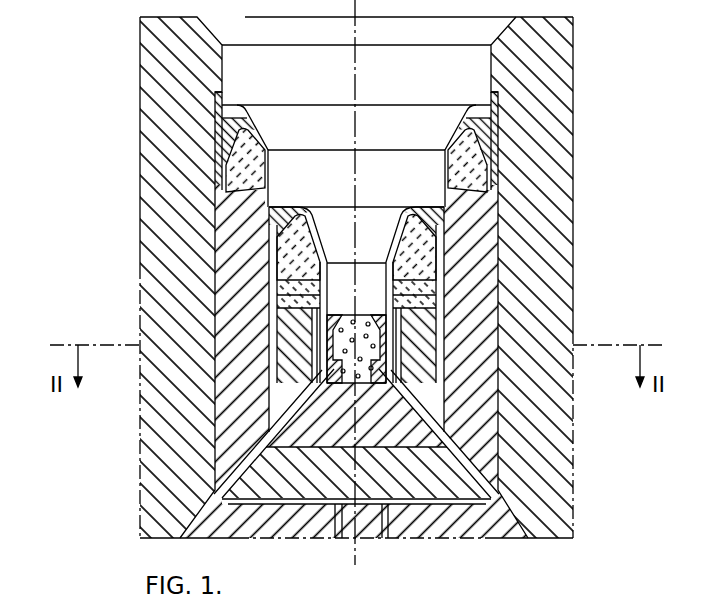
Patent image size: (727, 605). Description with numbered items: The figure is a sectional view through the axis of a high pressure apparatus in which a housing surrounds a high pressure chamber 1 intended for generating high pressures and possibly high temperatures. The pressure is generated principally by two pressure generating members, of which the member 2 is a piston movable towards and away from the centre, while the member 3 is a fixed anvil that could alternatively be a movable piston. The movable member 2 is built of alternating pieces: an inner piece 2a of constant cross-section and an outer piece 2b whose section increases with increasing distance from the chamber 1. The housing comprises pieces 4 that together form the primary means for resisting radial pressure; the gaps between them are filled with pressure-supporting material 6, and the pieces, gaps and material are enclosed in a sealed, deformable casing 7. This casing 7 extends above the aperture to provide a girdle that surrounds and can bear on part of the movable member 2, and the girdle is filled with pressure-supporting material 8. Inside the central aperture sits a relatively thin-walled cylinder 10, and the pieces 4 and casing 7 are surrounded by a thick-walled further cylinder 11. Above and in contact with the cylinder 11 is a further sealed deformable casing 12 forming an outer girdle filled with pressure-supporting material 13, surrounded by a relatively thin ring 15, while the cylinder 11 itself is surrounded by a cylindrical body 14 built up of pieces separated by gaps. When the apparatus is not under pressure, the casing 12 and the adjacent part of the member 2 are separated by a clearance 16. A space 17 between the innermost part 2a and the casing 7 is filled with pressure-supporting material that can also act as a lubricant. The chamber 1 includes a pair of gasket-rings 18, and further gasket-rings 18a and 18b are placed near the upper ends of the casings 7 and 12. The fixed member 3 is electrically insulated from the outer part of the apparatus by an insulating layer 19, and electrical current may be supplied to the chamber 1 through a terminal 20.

The high pressure chamber 1 is at (337, 347).
The pressure generating member 2 is at (252, 70).
The inner piece 2a is at (373, 287).
The outer piece 2b is at (383, 234).
The pressure generating member 3 is at (400, 430).
The pieces 4 is at (282, 402).
The pressure-supporting material 6 is at (303, 306).
The casing 7 is at (447, 381).
The pressure-supporting material 8 is at (410, 262).
The cylinder 10 is at (327, 363).
The further cylinder 11 is at (230, 413).
The sealed deformable casing 12 is at (240, 165).
The pressure-supporting material 13 is at (222, 185).
The cylindrical body 14 is at (547, 448).
The ring 15 is at (500, 107).
The clearance 16 is at (252, 118).
The space 17 is at (322, 280).
The gasket-rings 18 is at (387, 367).
The gasket-ring 18a is at (440, 215).
The gasket-ring 18b is at (480, 123).
The insulating layer 19 is at (483, 480).
The terminal 20 is at (365, 523).